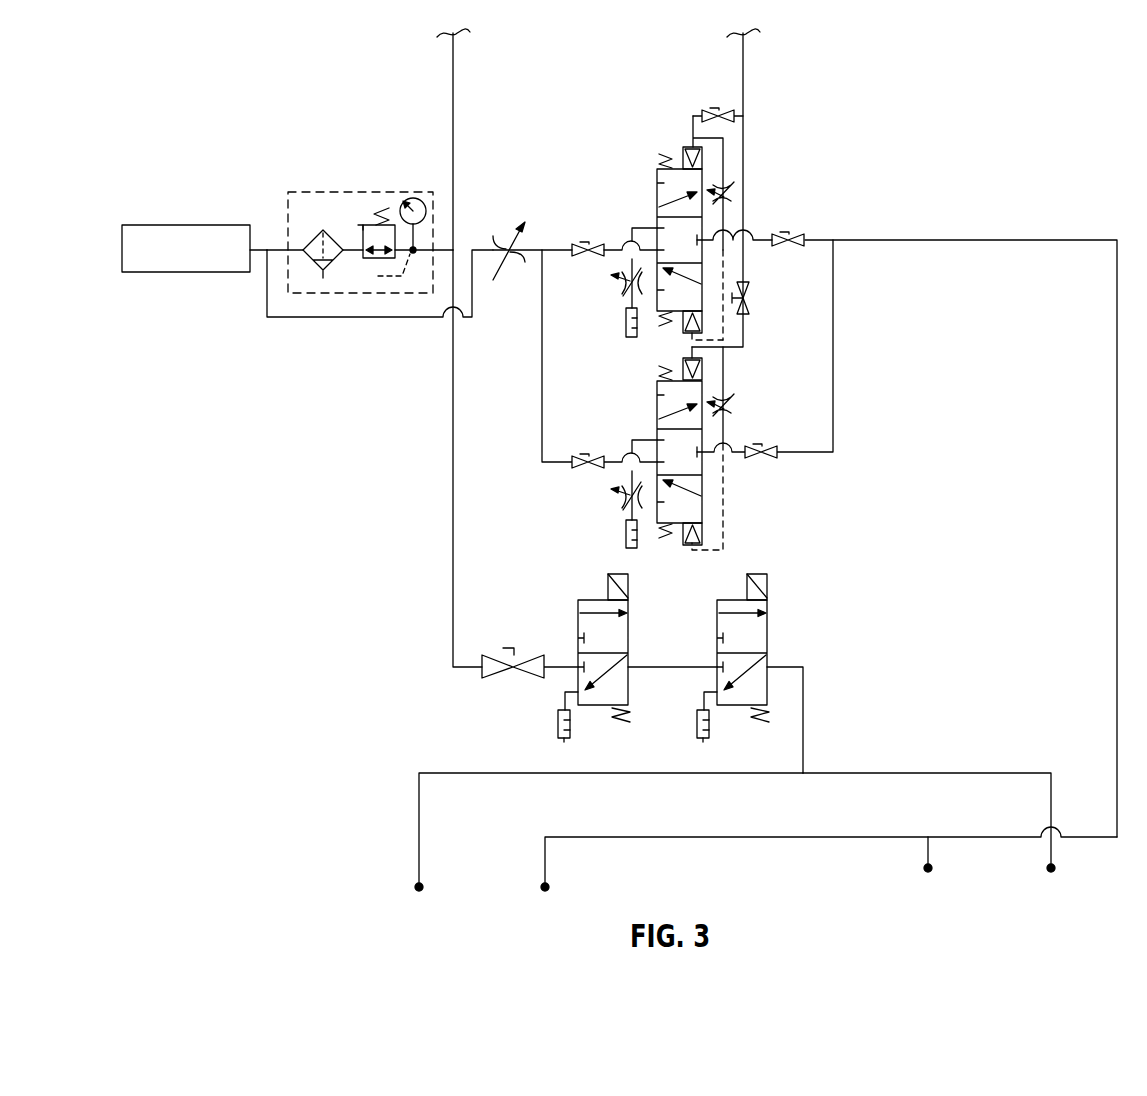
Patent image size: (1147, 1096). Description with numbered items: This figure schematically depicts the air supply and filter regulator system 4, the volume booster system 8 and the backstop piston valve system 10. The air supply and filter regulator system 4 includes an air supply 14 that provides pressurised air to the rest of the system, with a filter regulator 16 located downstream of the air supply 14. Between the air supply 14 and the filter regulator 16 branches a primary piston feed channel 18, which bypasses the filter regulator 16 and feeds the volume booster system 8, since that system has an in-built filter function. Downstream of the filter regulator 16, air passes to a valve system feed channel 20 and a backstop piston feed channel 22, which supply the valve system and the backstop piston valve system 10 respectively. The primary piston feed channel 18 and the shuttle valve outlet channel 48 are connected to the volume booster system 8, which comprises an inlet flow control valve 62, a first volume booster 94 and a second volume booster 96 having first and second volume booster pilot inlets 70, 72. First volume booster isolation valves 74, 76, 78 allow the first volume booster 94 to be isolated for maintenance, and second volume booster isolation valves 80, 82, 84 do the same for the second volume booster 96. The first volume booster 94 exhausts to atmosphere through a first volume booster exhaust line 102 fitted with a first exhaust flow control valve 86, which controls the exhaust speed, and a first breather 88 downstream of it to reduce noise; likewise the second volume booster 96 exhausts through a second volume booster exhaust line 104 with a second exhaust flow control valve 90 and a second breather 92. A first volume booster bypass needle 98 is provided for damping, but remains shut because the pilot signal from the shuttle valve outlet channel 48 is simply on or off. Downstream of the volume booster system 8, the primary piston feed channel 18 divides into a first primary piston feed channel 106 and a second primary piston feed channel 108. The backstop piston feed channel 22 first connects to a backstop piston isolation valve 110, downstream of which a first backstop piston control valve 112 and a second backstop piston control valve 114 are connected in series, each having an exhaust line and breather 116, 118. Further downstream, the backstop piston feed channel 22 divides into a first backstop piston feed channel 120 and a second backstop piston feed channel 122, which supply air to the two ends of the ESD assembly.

The air supply and filter regulator system 4 is at (175, 115).
The volume booster system 8 is at (888, 108).
The backstop piston valve system 10 is at (842, 559).
The air supply 14 is at (188, 224).
The filter regulator 16 is at (288, 215).
The primary piston feed channel 18 is at (290, 318).
The valve system feed channel 20 is at (453, 83).
The backstop piston feed channel 22 is at (453, 395).
The shuttle valve outlet channel 48 is at (743, 88).
The inlet flow control valve 62 is at (501, 245).
The first volume booster pilot inlet 70 is at (691, 145).
The second volume booster pilot inlet 72 is at (703, 372).
The first volume booster isolation valve 74 is at (592, 243).
The first volume booster isolation valve 76 is at (712, 107).
The first volume booster isolation valve 78 is at (798, 233).
The second volume booster isolation valve 80 is at (590, 455).
The second volume booster isolation valve 82 is at (748, 300).
The second volume booster isolation valve 84 is at (768, 445).
The first exhaust flow control valve 86 is at (613, 280).
The first breather 88 is at (626, 322).
The second exhaust flow control valve 90 is at (625, 503).
The second breather 92 is at (622, 530).
The first volume booster 94 is at (657, 183).
The second volume booster 96 is at (657, 408).
The first volume booster bypass needle 98 is at (735, 191).
The first volume booster exhaust line 102 is at (638, 227).
The second volume booster exhaust line 104 is at (628, 475).
The first primary piston feed channel 106 is at (544, 866).
The second primary piston feed channel 108 is at (927, 852).
The backstop piston isolation valve 110 is at (498, 678).
The first backstop piston control valve 112 is at (632, 638).
The second backstop piston control valve 114 is at (770, 638).
The first exhaust line and breather 116 is at (558, 727).
The second exhaust line and breather 118 is at (697, 727).
The first backstop piston feed channel 120 is at (418, 860).
The second backstop piston feed channel 122 is at (1050, 852).